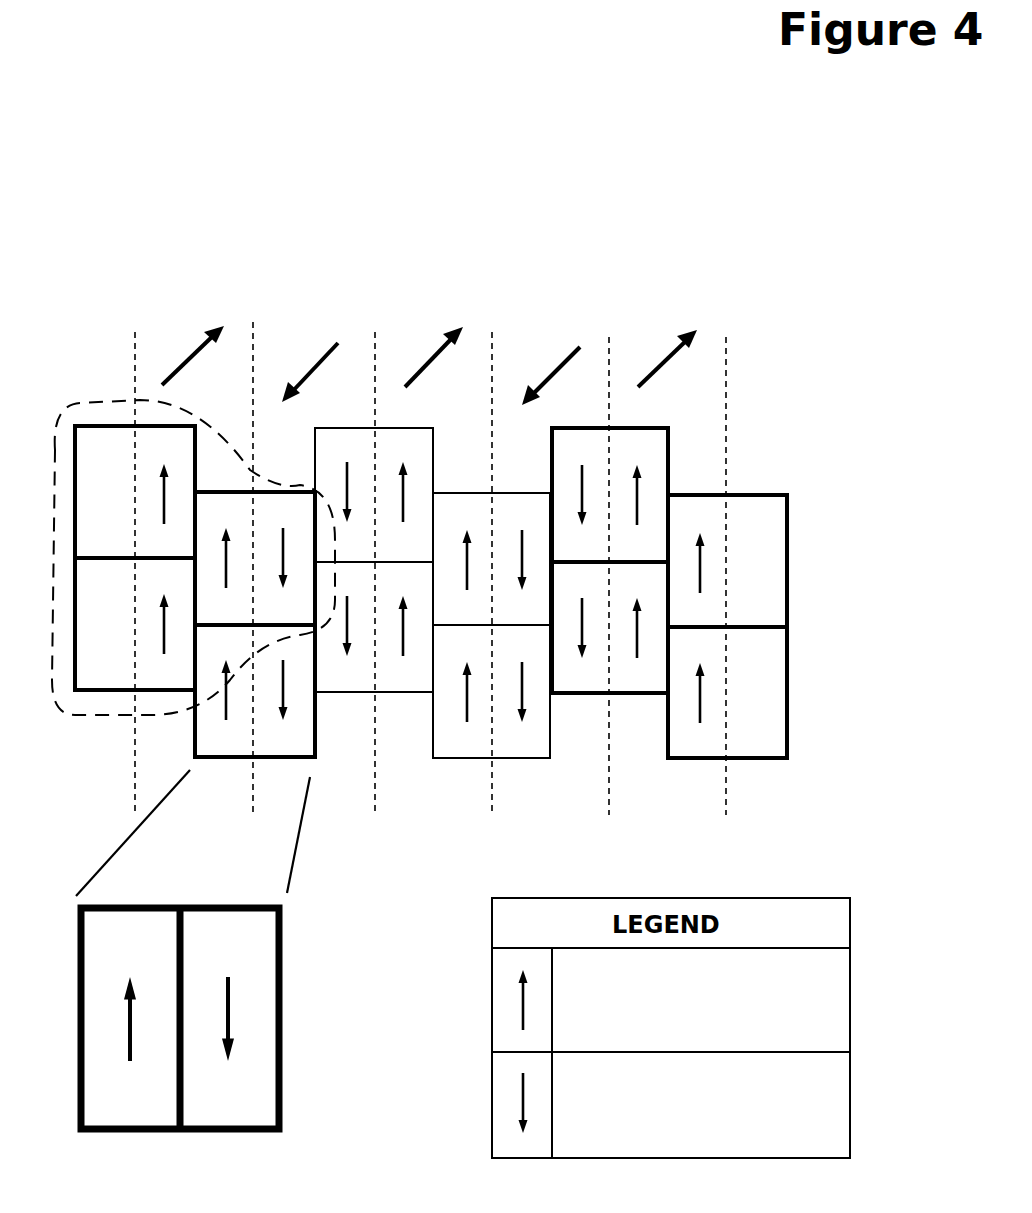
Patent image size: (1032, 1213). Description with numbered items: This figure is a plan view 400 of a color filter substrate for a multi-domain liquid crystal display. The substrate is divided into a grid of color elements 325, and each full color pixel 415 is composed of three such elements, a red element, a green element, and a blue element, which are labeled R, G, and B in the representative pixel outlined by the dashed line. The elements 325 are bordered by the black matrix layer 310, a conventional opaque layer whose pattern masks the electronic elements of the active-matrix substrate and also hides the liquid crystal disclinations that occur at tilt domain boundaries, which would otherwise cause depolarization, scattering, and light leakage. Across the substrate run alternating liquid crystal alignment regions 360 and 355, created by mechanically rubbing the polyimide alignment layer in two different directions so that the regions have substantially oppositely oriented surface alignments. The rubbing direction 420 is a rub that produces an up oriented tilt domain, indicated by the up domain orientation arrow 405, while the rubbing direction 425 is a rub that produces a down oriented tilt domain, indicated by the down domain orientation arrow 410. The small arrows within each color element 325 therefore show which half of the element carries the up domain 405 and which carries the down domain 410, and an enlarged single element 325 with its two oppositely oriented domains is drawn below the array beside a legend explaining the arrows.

The plan view of the color filter substrate 400 is at (642, 190).
The full color pixel 415 is at (83, 406).
The liquid crystal alignment region 360 is at (375, 323).
The liquid crystal alignment region 355 is at (493, 323).
The rubbing direction for down domain orientation 425 is at (565, 357).
The rubbing direction for up domain orientation 420 is at (663, 357).
The black matrix layer 310 is at (283, 1032).
The color element 325 is at (345, 949).
The up domain orientation 405 is at (679, 1010).
The down domain orientation 410 is at (681, 1114).